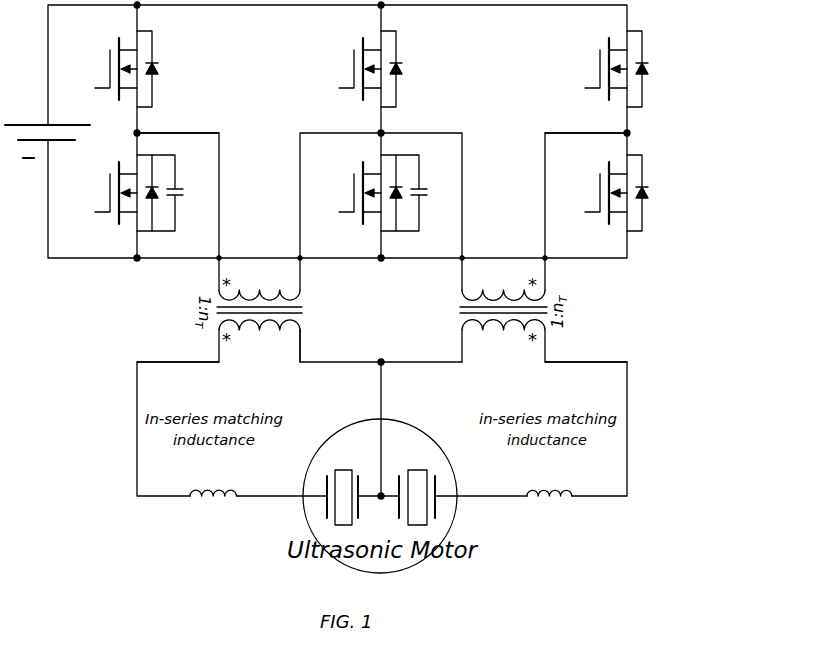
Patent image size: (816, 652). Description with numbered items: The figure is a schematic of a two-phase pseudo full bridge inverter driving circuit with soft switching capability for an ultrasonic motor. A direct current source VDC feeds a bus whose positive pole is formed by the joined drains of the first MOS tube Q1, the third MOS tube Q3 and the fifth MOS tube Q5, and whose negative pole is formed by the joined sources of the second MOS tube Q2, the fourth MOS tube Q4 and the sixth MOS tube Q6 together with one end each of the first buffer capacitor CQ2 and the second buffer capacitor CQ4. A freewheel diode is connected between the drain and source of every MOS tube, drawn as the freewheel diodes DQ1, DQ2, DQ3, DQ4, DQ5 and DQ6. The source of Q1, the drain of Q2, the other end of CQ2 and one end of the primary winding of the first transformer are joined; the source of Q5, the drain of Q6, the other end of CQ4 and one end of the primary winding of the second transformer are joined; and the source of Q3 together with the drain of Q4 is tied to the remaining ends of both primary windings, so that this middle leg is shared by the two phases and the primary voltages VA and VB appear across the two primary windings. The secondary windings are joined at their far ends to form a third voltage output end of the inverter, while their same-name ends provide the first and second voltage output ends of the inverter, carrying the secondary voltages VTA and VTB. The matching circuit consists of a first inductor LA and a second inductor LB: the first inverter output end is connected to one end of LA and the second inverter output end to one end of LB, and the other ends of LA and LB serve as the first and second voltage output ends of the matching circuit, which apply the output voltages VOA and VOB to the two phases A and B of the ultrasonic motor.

The first MOS tube Q1 is at (105, 69).
The second MOS tube Q2 is at (105, 193).
The third MOS tube Q3 is at (349, 69).
The fourth MOS tube Q4 is at (349, 193).
The fifth MOS tube Q5 is at (595, 69).
The sixth MOS tube Q6 is at (595, 193).
The freewheel diode DQ1 is at (166, 69).
The freewheel diode DQ2 is at (158, 206).
The freewheel diode DQ3 is at (409, 69).
The freewheel diode DQ4 is at (402, 206).
The freewheel diode DQ5 is at (656, 69).
The freewheel diode DQ6 is at (656, 193).
The first buffer capacitor CQ2 is at (181, 193).
The second buffer capacitor CQ4 is at (424, 193).
The direct current bus voltage VDC is at (47, 127).
The first transformer primary voltage VA is at (330, 110).
The second transformer primary voltage VB is at (440, 110).
The first voltage output of the inverter circuit VTA is at (328, 384).
The second voltage output of the inverter circuit VTB is at (434, 384).
The first voltage output of the matching circuit VOA is at (341, 408).
The second voltage output of the matching circuit VOB is at (480, 473).
The first inductor LA is at (214, 481).
The second inductor LB is at (549, 481).
The ultrasonic motor first phase A is at (342, 482).
The ultrasonic motor second phase B is at (417, 482).